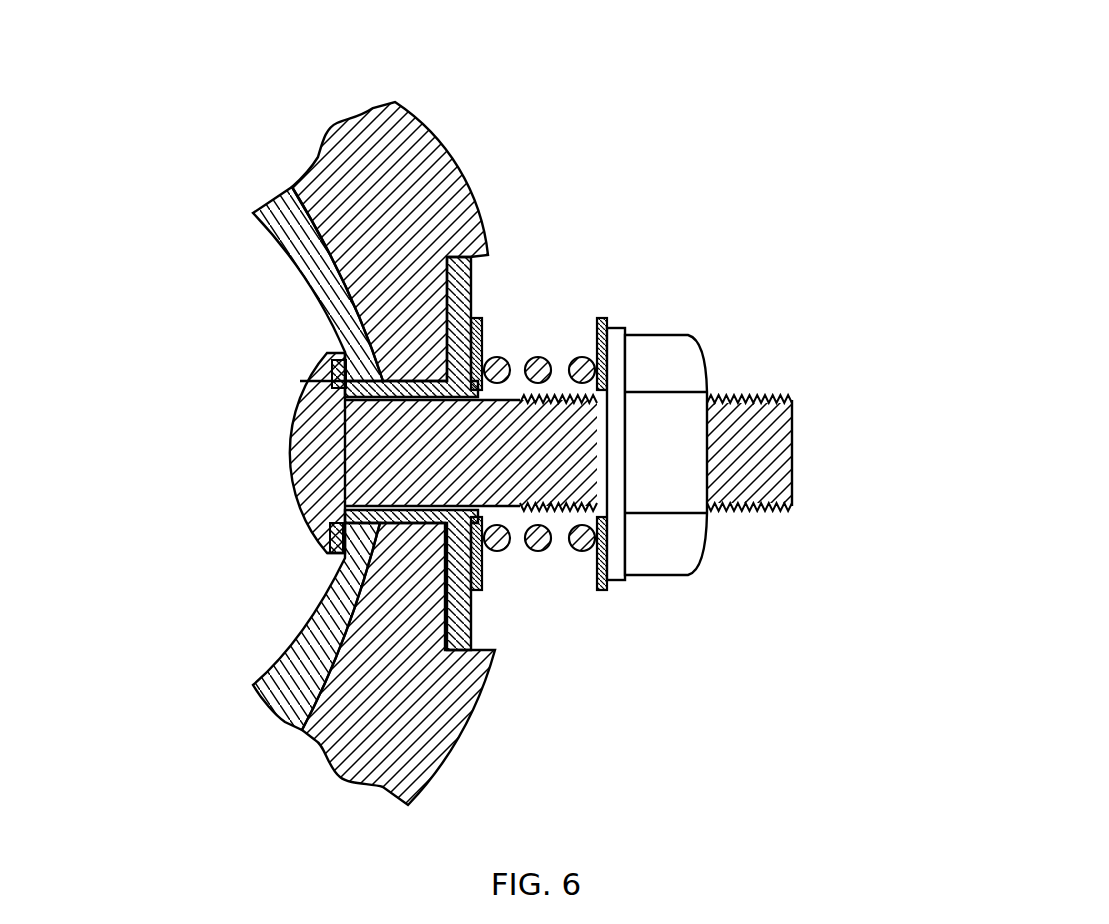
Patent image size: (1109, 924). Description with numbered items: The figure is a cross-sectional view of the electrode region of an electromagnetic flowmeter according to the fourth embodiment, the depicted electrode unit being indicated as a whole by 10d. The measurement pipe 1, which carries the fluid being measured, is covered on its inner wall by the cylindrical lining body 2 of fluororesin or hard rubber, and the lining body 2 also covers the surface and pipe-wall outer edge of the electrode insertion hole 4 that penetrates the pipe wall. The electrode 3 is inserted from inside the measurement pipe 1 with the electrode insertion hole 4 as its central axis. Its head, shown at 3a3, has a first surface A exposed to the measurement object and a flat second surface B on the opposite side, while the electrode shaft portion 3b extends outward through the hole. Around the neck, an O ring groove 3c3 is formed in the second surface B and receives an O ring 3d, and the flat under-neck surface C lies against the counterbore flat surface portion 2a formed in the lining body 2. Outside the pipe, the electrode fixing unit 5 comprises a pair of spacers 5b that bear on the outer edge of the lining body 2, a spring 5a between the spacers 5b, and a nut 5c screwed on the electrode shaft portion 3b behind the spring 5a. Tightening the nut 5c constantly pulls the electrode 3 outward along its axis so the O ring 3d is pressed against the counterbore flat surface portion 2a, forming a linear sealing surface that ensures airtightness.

The measurement pipe 1 is at (436, 130).
The lining body 2 is at (275, 228).
The counterbore flat surface portion 2a is at (290, 393).
The electrode 3 is at (446, 432).
The head portion of bolt 3a3 is at (345, 510).
The electrode shaft portion 3b is at (735, 440).
The O ring groove 3c3 is at (330, 553).
The O ring 3d is at (312, 350).
The electrode insertion hole 4 is at (290, 415).
The electrode fixing unit 5 is at (589, 382).
The spring 5a is at (536, 356).
The spacers 5b is at (476, 318).
The nut 5c is at (645, 413).
The mounting structure 10d is at (445, 411).
The first surface A is at (270, 458).
The second surface B is at (333, 519).
The under-neck surface C is at (360, 522).